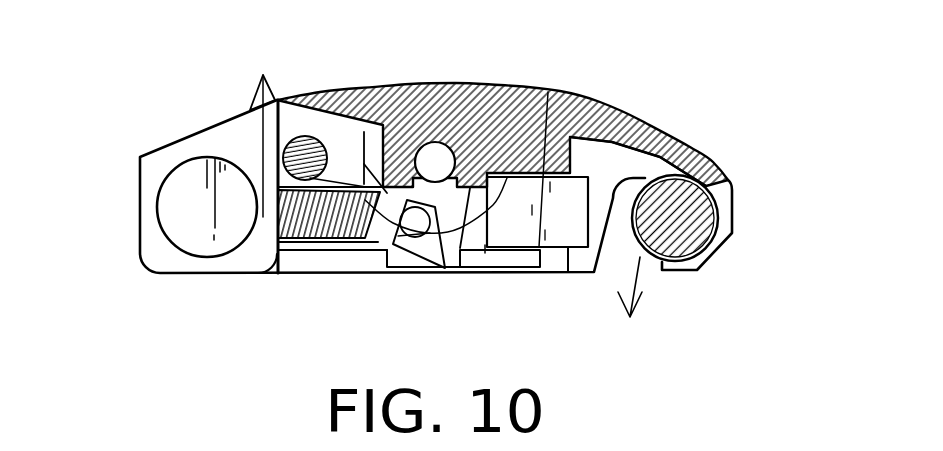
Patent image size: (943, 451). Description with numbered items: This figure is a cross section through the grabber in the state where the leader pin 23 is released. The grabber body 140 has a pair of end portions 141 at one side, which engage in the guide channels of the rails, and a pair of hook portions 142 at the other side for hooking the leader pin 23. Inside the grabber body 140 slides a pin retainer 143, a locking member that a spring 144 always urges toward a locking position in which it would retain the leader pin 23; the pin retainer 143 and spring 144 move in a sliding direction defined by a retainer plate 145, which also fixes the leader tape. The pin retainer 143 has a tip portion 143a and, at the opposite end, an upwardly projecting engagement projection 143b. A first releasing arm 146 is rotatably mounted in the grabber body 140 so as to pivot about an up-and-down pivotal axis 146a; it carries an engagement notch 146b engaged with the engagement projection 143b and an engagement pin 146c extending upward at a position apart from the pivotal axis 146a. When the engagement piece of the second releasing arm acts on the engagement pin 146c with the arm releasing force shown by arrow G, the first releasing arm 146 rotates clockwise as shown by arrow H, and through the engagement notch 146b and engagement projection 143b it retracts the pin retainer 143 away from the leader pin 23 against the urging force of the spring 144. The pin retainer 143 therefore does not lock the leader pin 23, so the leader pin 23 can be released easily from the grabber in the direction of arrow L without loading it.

The grabber body 140 is at (483, 268).
The end portions 141 is at (183, 208).
The hook portions 142 is at (723, 240).
The pin retainer 143 is at (554, 232).
The tip portion 143a is at (593, 183).
The engagement projection 143b is at (409, 255).
The spring 144 is at (323, 245).
The retainer plate 145 is at (350, 240).
The first releasing arm 146 is at (343, 150).
The pivotal axis 146a is at (437, 162).
The engagement notch 146b is at (414, 258).
The engagement pin 146c is at (307, 150).
The leader pin 23 is at (687, 218).
The arrow indicating arm releasing force G is at (262, 147).
The arrow indicating clockwise rotation of first releasing arm H is at (548, 92).
The arrow indicating release direction of leader pin L is at (627, 275).